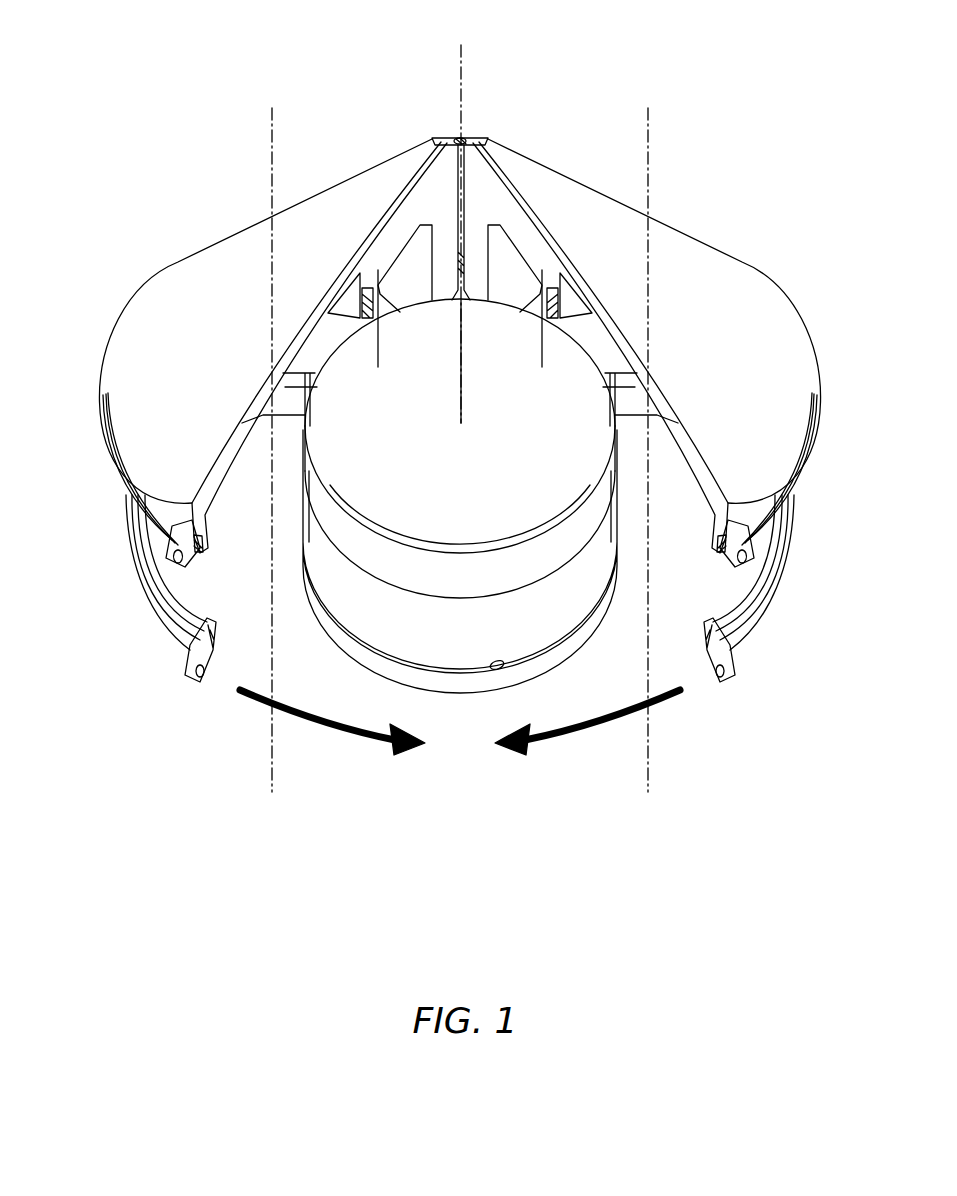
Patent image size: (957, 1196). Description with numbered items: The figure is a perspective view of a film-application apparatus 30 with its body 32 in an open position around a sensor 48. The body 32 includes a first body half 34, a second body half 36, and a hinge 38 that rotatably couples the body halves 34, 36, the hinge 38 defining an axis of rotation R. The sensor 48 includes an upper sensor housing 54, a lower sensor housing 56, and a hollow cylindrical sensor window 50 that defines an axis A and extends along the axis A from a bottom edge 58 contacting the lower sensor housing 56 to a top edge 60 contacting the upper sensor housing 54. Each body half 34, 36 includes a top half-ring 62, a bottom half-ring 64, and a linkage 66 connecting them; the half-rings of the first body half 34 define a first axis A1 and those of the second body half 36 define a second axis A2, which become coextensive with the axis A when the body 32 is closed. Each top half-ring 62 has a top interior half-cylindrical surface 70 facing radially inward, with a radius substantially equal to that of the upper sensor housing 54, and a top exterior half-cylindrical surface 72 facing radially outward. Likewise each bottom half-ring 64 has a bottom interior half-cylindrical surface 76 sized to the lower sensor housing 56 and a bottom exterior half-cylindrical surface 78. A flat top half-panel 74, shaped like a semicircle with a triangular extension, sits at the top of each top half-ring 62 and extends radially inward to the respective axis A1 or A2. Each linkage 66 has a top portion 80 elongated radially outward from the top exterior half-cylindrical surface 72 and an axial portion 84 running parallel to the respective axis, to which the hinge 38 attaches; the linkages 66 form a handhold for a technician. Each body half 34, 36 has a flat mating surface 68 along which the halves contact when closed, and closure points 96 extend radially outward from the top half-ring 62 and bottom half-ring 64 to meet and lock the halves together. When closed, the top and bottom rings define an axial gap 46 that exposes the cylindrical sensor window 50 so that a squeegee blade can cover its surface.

The film-application apparatus 30 is at (200, 178).
The body 32 is at (675, 223).
The first body half 34 is at (175, 262).
The second body half 36 is at (745, 262).
The hinge 38 is at (460, 134).
The axial gap 46 is at (718, 567).
The sensor 48 is at (380, 678).
The cylindrical sensor window 50 is at (448, 642).
The upper sensor housing 54 is at (527, 572).
The lower sensor housing 56 is at (570, 648).
The bottom edge 58 is at (500, 666).
The top edge 60 is at (470, 600).
The top half-ring 62 is at (794, 468).
The bottom half-ring 64 is at (752, 622).
The linkage 66 is at (477, 282).
The flat mating surface 68 is at (713, 665).
The top interior half-cylindrical surface 70 is at (572, 305).
The top exterior half-cylindrical surface 72 is at (778, 492).
The top half-panel 74 is at (572, 197).
The bottom interior half-cylindrical surface 76 is at (628, 400).
The bottom exterior half-cylindrical surface 78 is at (763, 597).
The top portion 80 is at (459, 327).
The axial portion 84 is at (513, 285).
The closure point 96 is at (727, 668).
The axis of rotation R is at (461, 220).
The axis A is at (462, 372).
The first axis A1 is at (271, 455).
The second axis A2 is at (647, 455).